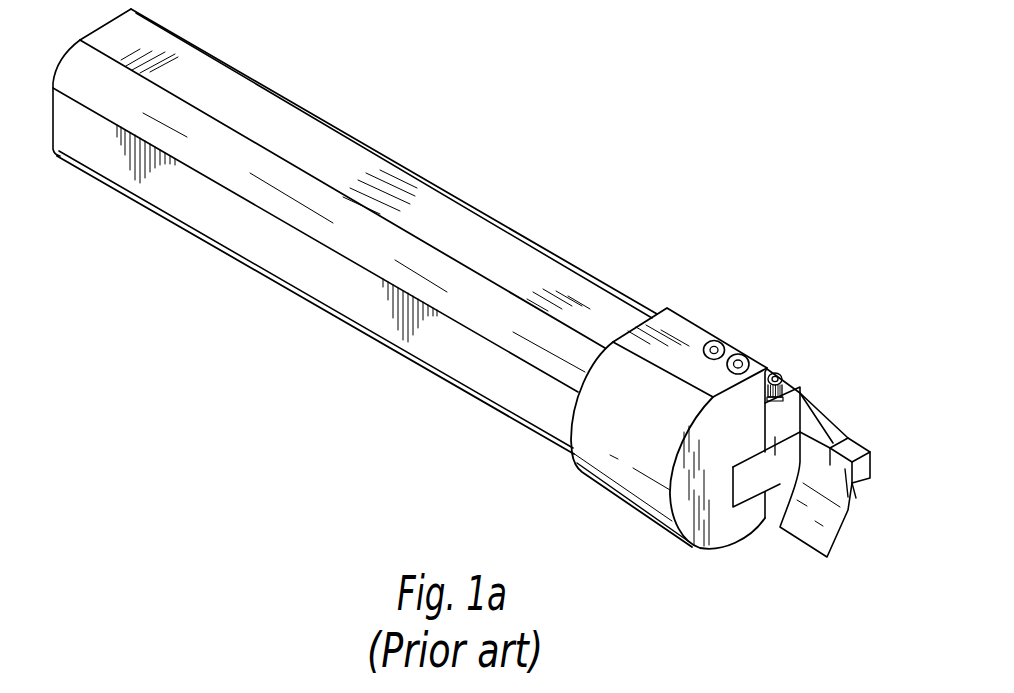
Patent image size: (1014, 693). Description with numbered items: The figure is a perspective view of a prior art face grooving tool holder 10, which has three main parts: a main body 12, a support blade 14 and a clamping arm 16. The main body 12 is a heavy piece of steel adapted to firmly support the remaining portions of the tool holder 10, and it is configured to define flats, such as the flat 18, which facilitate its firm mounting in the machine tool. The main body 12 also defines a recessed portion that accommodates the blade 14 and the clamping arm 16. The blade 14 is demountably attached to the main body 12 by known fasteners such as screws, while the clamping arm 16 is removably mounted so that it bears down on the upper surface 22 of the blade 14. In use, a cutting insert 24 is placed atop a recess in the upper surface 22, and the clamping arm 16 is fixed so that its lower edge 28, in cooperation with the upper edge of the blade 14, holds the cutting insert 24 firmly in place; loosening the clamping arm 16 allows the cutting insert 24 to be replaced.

The tool holder 10 is at (662, 223).
The main body 12 is at (507, 218).
The support blade 14 is at (840, 537).
The clamping arm 16 is at (826, 408).
The flat 18 is at (333, 160).
The upper surface 22 is at (850, 507).
The cutting insert 24 is at (855, 442).
The lower edge 28 is at (780, 537).